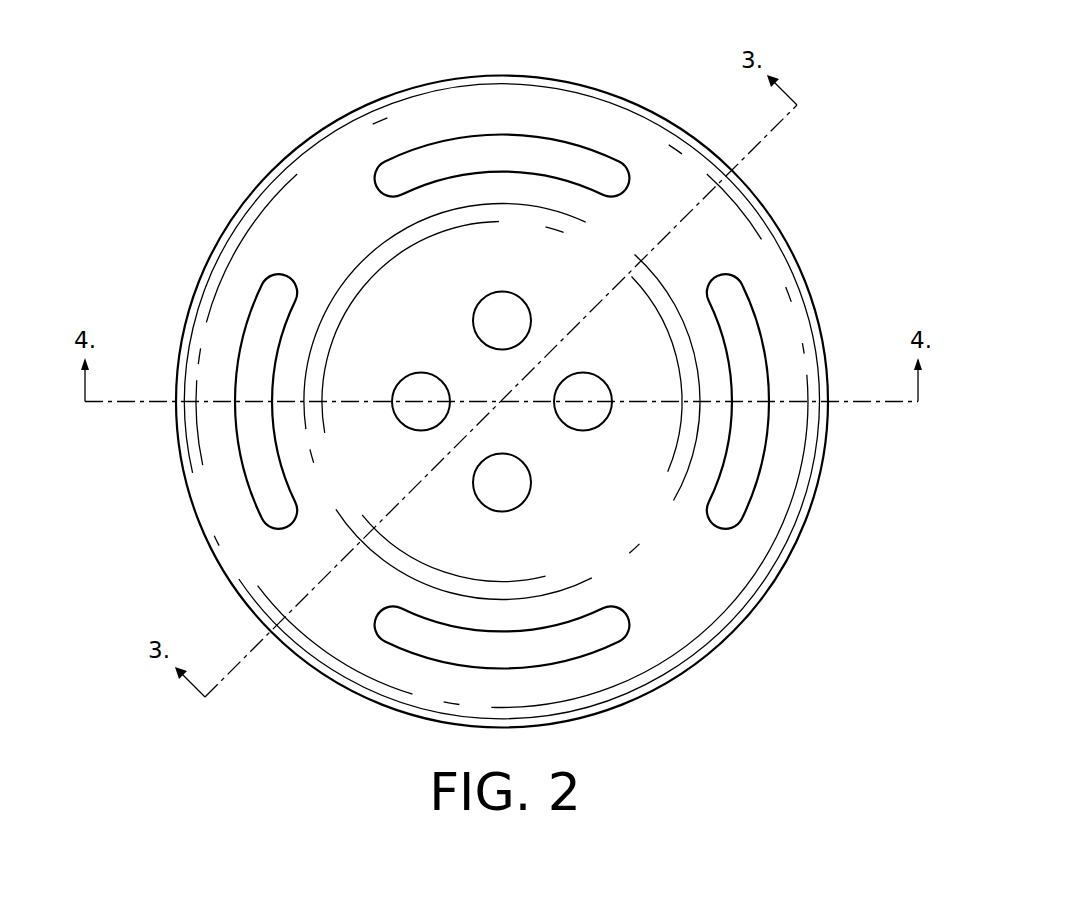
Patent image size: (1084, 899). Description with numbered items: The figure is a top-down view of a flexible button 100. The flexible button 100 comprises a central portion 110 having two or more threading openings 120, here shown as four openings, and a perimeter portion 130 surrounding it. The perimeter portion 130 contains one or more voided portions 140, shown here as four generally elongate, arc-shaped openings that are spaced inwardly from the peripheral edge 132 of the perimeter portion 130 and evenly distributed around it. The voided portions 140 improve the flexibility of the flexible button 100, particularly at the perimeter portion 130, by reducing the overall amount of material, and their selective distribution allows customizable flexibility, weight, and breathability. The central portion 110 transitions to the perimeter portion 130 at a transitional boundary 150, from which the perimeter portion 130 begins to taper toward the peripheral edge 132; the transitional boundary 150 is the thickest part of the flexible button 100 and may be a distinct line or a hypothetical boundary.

The flexible button 100 is at (816, 158).
The central portion 110 is at (502, 402).
The threading openings 120 is at (502, 305).
The perimeter portion 130 is at (502, 413).
The peripheral edge 132 is at (730, 633).
The voided portions 140 is at (515, 155).
The transitional boundary 150 is at (700, 435).